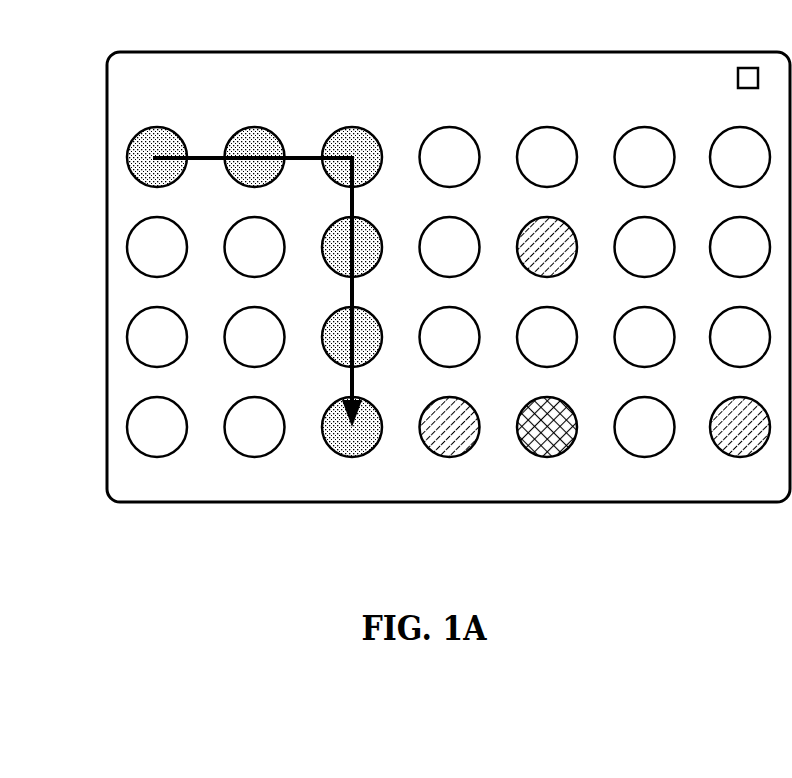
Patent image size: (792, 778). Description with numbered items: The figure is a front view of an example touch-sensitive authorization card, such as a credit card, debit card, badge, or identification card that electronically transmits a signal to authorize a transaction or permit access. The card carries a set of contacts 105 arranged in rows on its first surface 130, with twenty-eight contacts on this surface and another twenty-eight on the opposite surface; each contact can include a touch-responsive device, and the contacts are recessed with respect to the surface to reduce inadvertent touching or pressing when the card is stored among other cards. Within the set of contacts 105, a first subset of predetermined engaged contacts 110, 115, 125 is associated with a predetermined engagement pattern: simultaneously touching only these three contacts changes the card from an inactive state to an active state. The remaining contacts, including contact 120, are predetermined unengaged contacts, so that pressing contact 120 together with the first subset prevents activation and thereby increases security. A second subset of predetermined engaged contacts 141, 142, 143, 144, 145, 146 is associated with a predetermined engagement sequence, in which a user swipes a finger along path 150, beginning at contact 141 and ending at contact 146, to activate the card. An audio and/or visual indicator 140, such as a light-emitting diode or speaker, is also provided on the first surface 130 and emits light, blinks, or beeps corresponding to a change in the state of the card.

The set of contacts 105 is at (230, 80).
The predetermined engaged contact 110 is at (469, 405).
The predetermined engaged contact 115 is at (567, 225).
The predetermined unengaged contact 120 is at (560, 404).
The predetermined engaged contact 125 is at (719, 448).
The first surface 130 is at (433, 87).
The indicator 140 is at (738, 80).
The predetermined engaged contact 141 is at (163, 127).
The predetermined engaged contact 142 is at (271, 130).
The predetermined engaged contact 143 is at (373, 129).
The predetermined engaged contact 144 is at (373, 221).
The predetermined engaged contact 145 is at (371, 310).
The predetermined engaged contact 146 is at (371, 400).
The path 150 is at (351, 204).